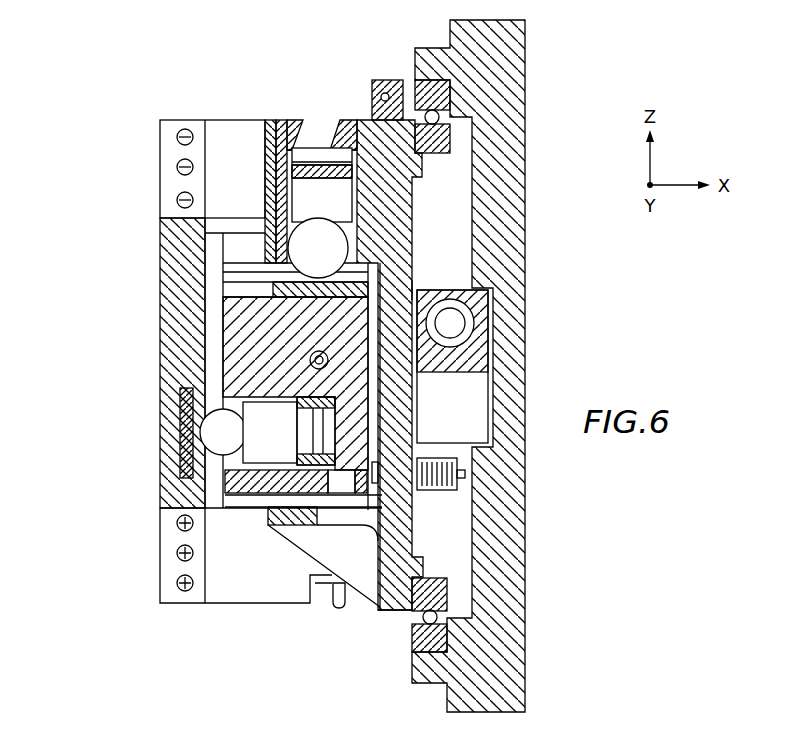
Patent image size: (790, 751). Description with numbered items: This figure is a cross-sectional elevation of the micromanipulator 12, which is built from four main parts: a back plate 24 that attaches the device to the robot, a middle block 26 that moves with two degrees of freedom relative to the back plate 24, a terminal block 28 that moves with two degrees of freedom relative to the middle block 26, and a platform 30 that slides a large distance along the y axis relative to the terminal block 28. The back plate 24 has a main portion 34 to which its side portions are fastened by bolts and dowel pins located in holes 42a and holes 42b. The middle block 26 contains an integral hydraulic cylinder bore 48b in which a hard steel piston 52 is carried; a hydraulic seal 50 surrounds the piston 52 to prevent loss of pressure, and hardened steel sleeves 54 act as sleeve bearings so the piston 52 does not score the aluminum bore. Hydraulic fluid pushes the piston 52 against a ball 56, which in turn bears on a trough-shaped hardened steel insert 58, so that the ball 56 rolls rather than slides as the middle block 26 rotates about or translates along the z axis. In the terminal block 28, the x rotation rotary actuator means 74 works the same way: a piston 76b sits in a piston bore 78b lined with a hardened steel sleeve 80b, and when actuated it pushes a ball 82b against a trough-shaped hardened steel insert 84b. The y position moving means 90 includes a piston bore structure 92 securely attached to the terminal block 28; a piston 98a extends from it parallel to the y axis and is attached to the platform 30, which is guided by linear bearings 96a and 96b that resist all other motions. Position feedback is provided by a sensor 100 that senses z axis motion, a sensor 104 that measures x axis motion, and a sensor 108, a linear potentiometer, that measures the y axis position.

The micromanipulator 12 is at (128, 124).
The back plate 24 is at (152, 265).
The middle block 26 is at (238, 339).
The terminal block 28 is at (372, 620).
The platform 30 is at (529, 582).
The main portion 34 is at (172, 150).
The holes 42a is at (177, 201).
The holes 42b is at (177, 583).
The hydraulic cylinder bore 48b is at (237, 471).
The hydraulic seal 50 is at (298, 447).
The piston 52 is at (250, 426).
The hardened steel sleeves 54 is at (270, 470).
The ball 56 is at (208, 442).
The hardened steel inserts 58 is at (180, 412).
The x rotation rotary actuator means 74 is at (320, 72).
The piston 76b is at (302, 207).
The piston bore 78b is at (266, 122).
The hardened steel sleeve 80b is at (290, 120).
The ball 82b is at (300, 258).
The hardened steel insert 84b is at (272, 287).
The y position moving means 90 is at (455, 225).
The piston bore structure 92 is at (426, 288).
The linear bearing 96a is at (445, 143).
The linear bearing 96b is at (406, 634).
The piston 98a is at (450, 320).
The sensor 100 is at (322, 584).
The sensor 104 is at (430, 490).
The sensor 108 is at (385, 80).